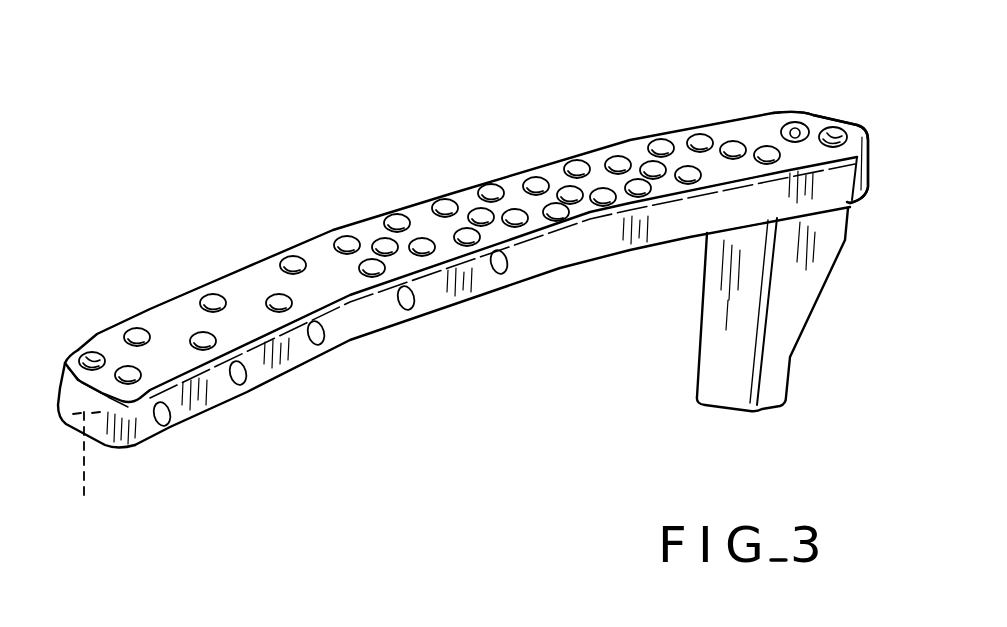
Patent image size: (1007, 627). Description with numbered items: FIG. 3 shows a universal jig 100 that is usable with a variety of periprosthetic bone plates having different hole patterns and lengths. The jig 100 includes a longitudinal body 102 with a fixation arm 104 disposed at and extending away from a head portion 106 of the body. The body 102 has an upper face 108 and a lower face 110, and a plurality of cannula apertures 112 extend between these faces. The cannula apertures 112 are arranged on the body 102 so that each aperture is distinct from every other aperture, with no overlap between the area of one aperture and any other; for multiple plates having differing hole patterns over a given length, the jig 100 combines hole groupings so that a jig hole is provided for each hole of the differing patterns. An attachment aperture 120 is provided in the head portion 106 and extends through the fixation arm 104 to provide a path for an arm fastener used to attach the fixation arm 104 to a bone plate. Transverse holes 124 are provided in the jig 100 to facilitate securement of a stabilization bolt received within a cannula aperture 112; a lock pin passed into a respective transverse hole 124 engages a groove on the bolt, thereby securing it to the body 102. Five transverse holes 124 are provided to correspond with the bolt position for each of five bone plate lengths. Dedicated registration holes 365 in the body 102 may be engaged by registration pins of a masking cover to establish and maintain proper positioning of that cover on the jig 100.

The universal jig 100 is at (366, 116).
The longitudinal body 102 is at (592, 240).
The fixation arm 104 is at (820, 286).
The head portion 106 is at (784, 96).
The upper face 108 is at (167, 303).
The lower face 110 is at (97, 439).
The cannula apertures 112 is at (572, 168).
The attachment aperture 120 is at (795, 128).
The transverse holes 124 is at (245, 380).
The registration holes 365 is at (92, 360).